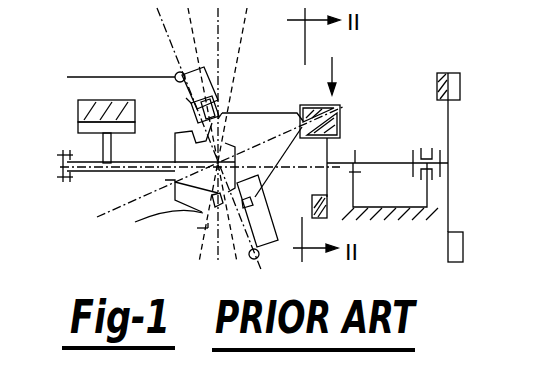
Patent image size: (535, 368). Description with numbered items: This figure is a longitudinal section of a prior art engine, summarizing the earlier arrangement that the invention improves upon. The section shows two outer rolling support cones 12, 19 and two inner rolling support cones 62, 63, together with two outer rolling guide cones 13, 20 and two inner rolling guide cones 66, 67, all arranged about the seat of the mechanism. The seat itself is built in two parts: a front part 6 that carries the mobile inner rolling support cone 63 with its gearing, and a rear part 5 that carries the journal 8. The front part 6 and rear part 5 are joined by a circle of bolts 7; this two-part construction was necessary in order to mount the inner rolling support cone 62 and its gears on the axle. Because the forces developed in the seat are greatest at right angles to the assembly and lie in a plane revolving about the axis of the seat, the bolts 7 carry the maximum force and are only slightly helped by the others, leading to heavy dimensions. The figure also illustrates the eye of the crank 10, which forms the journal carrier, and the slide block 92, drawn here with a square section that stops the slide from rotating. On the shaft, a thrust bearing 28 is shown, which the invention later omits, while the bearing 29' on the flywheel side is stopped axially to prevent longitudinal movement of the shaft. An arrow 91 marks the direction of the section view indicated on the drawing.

The rear part 5 is at (281, 113).
The front part 6 is at (178, 141).
The bolts 7 is at (216, 103).
The journal 8 is at (303, 128).
The eye of the crank 10 is at (341, 131).
The outer rolling support cone 12 is at (218, 98).
The outer rolling guide cone 13 is at (194, 73).
The outer rolling support cone 19 is at (192, 110).
The outer rolling guide cone 20 is at (190, 100).
The thrust bearing 28 is at (360, 173).
The bearing 29' is at (457, 143).
The inner rolling support cone 62 is at (243, 198).
The inner rolling support cone 63 is at (180, 184).
The inner rolling guide cone 66 is at (270, 180).
The inner rolling guide cone 67 is at (172, 213).
The direction arrow 91 is at (347, 75).
The slide block 92 is at (316, 112).